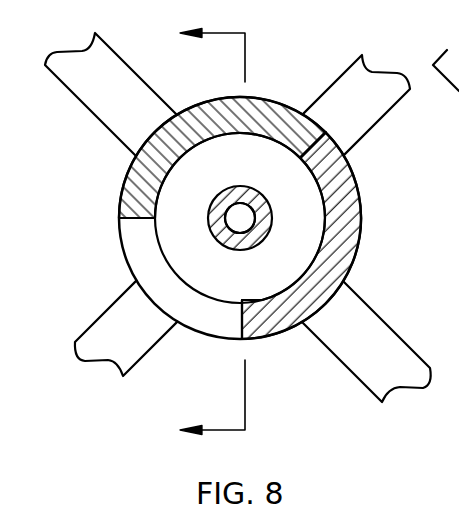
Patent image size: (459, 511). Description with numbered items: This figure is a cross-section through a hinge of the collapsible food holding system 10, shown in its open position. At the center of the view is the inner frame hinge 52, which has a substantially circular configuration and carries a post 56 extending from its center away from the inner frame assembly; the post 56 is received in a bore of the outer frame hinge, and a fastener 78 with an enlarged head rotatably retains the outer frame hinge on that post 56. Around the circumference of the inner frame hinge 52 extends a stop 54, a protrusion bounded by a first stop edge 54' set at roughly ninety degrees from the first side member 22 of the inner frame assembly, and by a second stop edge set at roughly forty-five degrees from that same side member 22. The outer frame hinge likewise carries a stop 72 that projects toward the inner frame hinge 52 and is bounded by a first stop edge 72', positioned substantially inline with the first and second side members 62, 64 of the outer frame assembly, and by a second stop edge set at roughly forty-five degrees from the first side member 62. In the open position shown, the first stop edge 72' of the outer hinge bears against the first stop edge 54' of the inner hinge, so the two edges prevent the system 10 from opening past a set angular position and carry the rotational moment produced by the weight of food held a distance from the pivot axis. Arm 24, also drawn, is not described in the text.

The collapsible food holding system 10 is at (191, 234).
The first side member 22 is at (360, 380).
The arm 24 is at (77, 100).
The inner frame hinge 52 is at (124, 258).
The stop 54 is at (337, 235).
The first stop edge 54' is at (273, 159).
The post 56 is at (210, 230).
The first side member 62 is at (105, 312).
The second side member 64 is at (380, 126).
The stop 72 is at (183, 157).
The first stop edge 72' is at (295, 112).
The fastener 78 is at (243, 230).